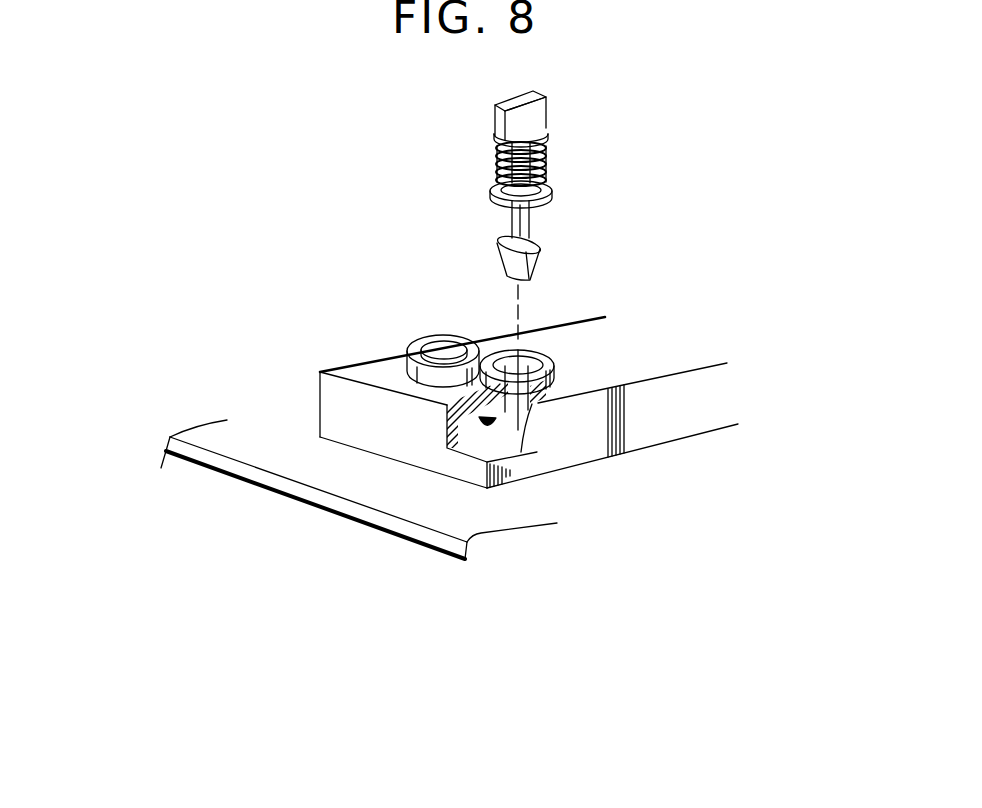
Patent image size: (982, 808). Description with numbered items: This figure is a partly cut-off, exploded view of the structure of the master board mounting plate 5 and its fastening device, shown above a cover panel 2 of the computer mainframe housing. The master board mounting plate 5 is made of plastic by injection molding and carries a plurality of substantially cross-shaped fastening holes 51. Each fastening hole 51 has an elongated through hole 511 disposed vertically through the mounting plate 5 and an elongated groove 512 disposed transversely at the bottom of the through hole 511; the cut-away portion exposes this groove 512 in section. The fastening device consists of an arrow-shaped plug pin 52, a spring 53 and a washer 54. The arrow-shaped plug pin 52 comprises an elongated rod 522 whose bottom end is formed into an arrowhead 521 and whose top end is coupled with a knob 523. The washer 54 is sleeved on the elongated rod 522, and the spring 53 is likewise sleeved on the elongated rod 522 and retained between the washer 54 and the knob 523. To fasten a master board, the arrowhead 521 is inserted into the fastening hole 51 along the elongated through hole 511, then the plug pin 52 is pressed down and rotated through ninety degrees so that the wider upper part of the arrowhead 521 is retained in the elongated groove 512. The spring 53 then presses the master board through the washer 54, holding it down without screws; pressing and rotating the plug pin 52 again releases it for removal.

The cover panel 2 is at (301, 500).
The master board mounting plate 5 is at (337, 398).
The fastening hole 51 is at (448, 345).
The elongated through hole 511 is at (547, 362).
The elongated groove 512 is at (520, 418).
The arrow-shaped plug pin 52 is at (513, 259).
The arrowhead 521 is at (506, 263).
The elongated rod 522 is at (509, 217).
The knob 523 is at (493, 118).
The spring 53 is at (545, 153).
The washer 54 is at (550, 194).